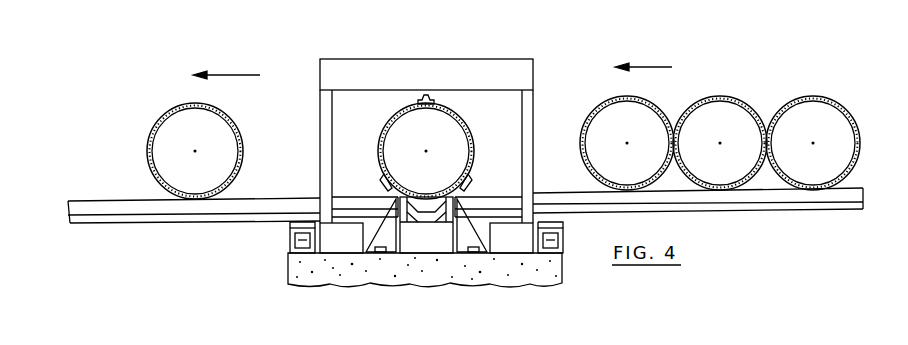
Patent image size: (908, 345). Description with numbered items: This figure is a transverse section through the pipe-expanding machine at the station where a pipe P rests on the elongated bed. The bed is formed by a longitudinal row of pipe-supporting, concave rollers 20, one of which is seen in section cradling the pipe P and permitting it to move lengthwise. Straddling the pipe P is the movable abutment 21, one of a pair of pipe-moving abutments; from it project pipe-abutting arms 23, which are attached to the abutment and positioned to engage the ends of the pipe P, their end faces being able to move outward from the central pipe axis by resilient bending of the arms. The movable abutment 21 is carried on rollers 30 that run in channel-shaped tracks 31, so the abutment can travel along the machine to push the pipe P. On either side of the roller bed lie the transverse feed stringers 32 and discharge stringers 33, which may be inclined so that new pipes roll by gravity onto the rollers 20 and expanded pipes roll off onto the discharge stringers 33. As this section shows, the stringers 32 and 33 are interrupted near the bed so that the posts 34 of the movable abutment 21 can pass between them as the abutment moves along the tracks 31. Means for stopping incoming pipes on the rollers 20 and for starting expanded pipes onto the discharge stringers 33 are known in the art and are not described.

The pipe-supporting concave rollers 20 is at (406, 217).
The movable abutment 21 is at (488, 59).
The arms 23 is at (435, 98).
The rollers 30 is at (290, 236).
The channel-shaped tracks 31 is at (290, 251).
The feed stringers 32 is at (843, 204).
The discharge stringers 33 is at (160, 223).
The posts 34 is at (527, 104).
The pipe P is at (470, 131).